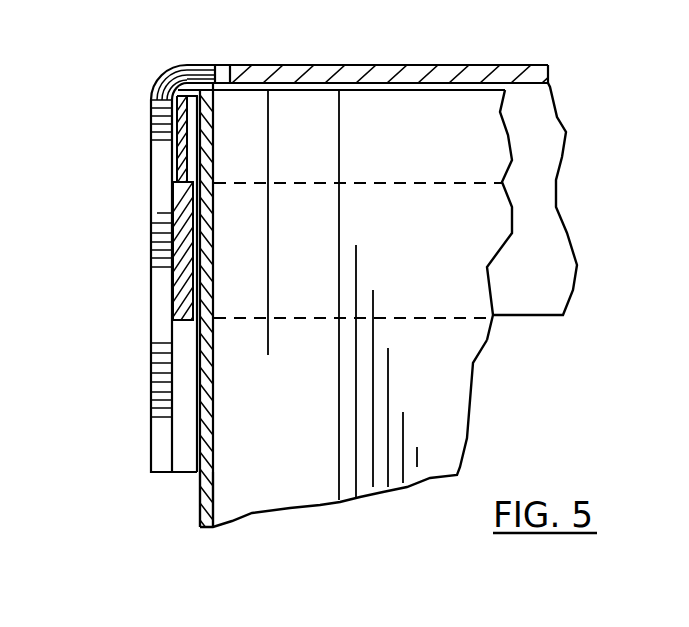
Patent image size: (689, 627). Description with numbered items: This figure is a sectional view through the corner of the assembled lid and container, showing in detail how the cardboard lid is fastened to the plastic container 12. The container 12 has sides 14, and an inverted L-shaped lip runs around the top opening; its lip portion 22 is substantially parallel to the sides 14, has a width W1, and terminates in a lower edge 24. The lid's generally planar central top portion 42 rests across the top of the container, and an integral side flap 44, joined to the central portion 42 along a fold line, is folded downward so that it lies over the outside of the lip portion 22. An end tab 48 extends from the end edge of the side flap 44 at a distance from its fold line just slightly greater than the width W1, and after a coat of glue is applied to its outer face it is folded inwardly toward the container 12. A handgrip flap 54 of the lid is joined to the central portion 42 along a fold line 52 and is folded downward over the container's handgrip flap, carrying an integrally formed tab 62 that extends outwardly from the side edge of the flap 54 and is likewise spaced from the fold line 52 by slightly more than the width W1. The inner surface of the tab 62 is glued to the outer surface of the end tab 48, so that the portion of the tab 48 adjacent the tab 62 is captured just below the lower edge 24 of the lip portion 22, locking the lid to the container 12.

The container 12 is at (385, 500).
The sides 14 is at (202, 493).
The lip portion 22 is at (493, 148).
The lower edge 24 is at (207, 163).
The central top portion 42 is at (418, 73).
The side flap 44 is at (543, 210).
The end tab 48 is at (180, 210).
The fold line 52 is at (157, 83).
The flap 54 is at (145, 127).
The tab 62 is at (148, 202).